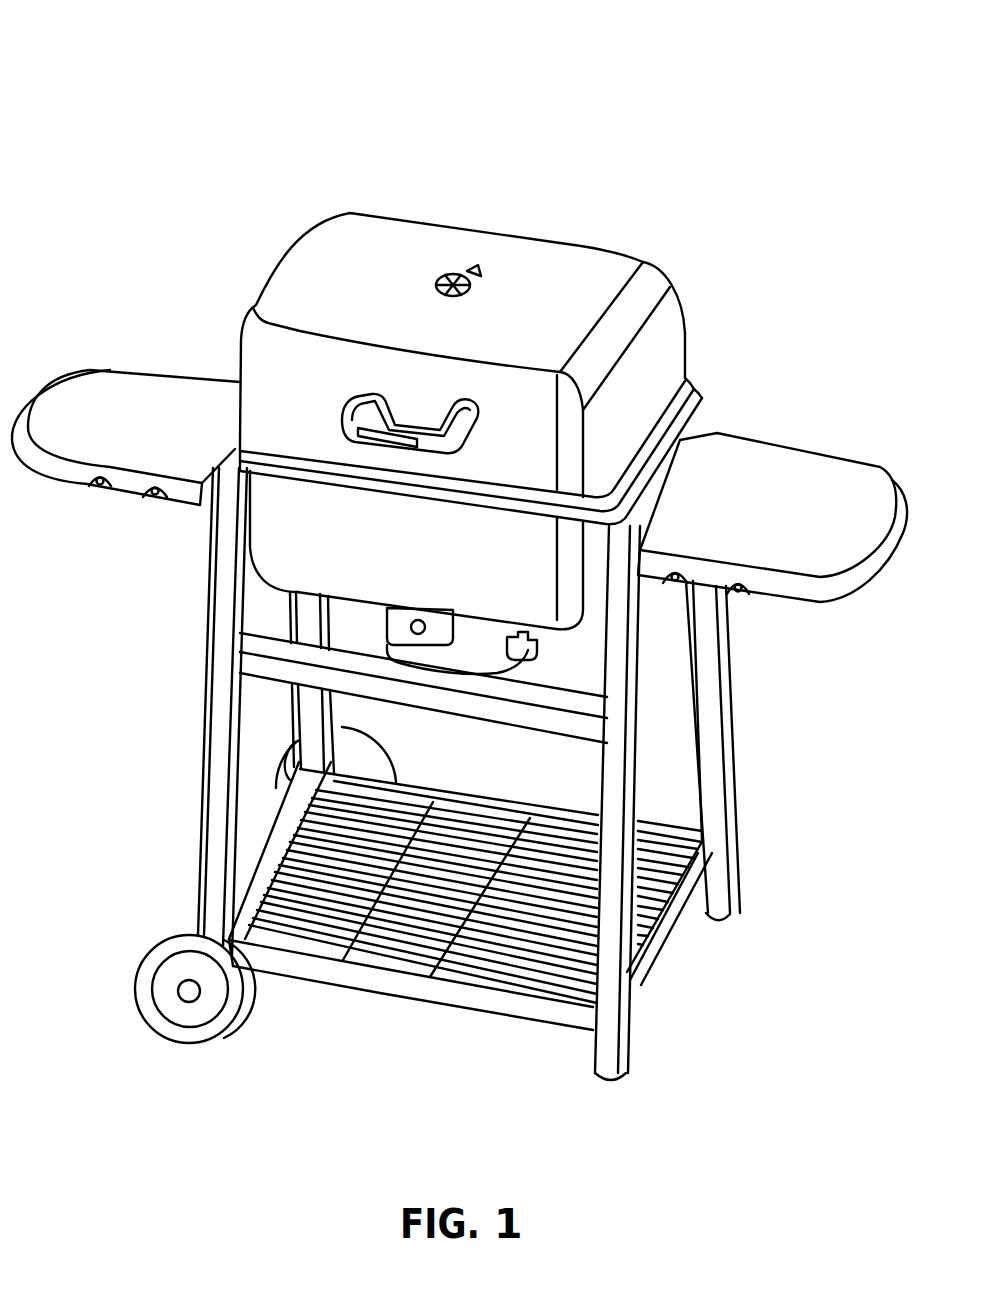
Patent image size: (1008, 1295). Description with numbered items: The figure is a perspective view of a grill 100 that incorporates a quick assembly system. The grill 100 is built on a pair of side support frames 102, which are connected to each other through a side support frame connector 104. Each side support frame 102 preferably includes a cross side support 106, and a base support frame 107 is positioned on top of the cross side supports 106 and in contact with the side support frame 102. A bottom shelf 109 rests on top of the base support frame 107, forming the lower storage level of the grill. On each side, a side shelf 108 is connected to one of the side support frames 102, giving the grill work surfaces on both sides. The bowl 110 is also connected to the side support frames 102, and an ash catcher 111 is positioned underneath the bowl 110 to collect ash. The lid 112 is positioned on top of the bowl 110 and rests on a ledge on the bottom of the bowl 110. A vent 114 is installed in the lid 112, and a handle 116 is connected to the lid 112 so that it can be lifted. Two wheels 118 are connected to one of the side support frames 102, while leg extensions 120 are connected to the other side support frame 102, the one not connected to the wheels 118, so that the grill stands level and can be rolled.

The grill 100 is at (177, 54).
The side support frames 102 is at (213, 710).
The side support frame connector 104 is at (597, 730).
The cross side supports 106 is at (663, 960).
The base support frame 107 is at (487, 1004).
The side shelves 108 is at (140, 387).
The bottom shelf 109 is at (387, 947).
The bowl 110 is at (280, 553).
The ash catcher 111 is at (387, 612).
The lid 112 is at (670, 338).
The vent 114 is at (436, 284).
The handle 116 is at (447, 437).
The wheels 118 is at (280, 772).
The leg extensions 120 is at (727, 920).